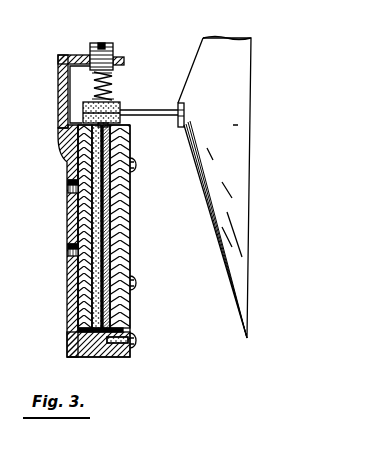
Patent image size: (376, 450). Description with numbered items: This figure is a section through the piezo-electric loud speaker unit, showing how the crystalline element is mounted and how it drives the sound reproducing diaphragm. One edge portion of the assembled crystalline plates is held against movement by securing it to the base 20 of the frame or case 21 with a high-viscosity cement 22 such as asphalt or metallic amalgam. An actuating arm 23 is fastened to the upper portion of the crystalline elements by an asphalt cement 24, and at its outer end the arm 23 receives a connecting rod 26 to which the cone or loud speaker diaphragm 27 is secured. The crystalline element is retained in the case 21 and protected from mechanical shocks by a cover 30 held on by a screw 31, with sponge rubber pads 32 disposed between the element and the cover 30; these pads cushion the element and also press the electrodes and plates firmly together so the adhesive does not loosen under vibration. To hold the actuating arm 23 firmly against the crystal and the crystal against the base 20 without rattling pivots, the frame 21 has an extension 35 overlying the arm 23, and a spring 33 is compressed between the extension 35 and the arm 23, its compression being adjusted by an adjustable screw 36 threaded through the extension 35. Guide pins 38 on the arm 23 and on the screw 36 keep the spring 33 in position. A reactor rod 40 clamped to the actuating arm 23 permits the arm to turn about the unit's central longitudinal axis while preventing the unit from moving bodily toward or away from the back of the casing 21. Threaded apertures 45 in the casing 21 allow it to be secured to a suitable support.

The base 20 is at (108, 352).
The frame or case 21 is at (67, 329).
The cement 22 is at (123, 330).
The actuating arm 23 is at (83, 106).
The asphalt cement 24 is at (124, 124).
The connecting rod 26 is at (180, 102).
The loud speaker diaphragm 27 is at (246, 75).
The cover 30 is at (130, 228).
The screw 31 is at (136, 166).
The sponge rubber pads 32 is at (74, 226).
The spring 33 is at (86, 78).
The extension 35 is at (78, 56).
The adjustable screw 36 is at (113, 50).
The guide pins 38 is at (112, 96).
The reactor rod 40 is at (72, 122).
The threaded apertures 45 is at (68, 186).